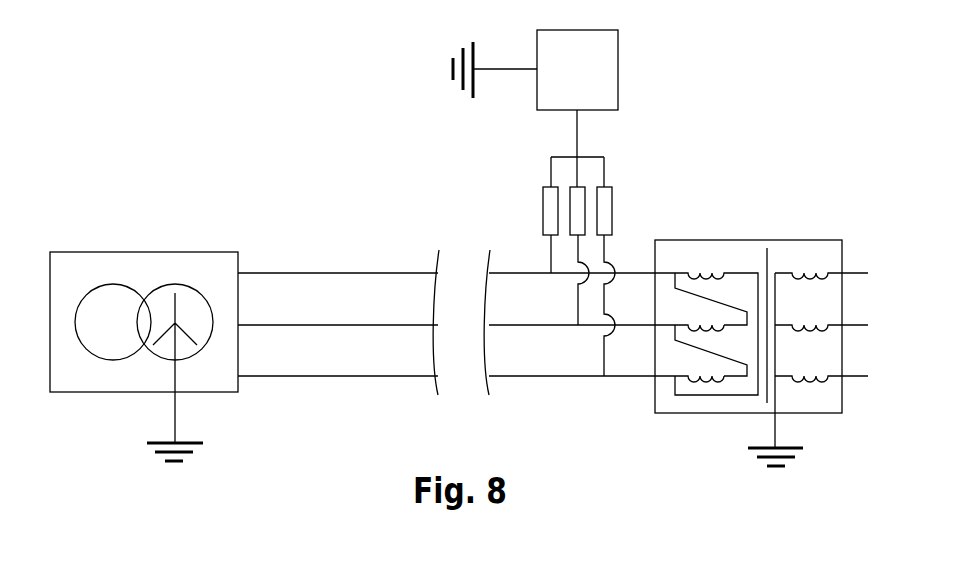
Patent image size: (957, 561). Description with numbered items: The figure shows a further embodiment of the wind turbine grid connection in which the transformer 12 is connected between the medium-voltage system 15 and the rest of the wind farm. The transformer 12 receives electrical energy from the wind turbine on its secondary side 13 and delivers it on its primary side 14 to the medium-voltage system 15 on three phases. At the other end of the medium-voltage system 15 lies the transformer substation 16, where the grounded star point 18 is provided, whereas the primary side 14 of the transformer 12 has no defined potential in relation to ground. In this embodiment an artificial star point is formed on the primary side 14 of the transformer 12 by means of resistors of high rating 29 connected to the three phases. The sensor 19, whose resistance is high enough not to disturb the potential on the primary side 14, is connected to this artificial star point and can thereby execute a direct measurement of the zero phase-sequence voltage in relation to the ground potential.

The transformer 12 is at (739, 414).
The secondary side 13 is at (807, 238).
The primary side 14 is at (697, 238).
The medium-voltage system 15 is at (343, 271).
The transformer substation 16 is at (90, 250).
The star point 18 is at (175, 423).
The sensor 19 is at (618, 63).
The resistors of high rating 29 is at (541, 213).